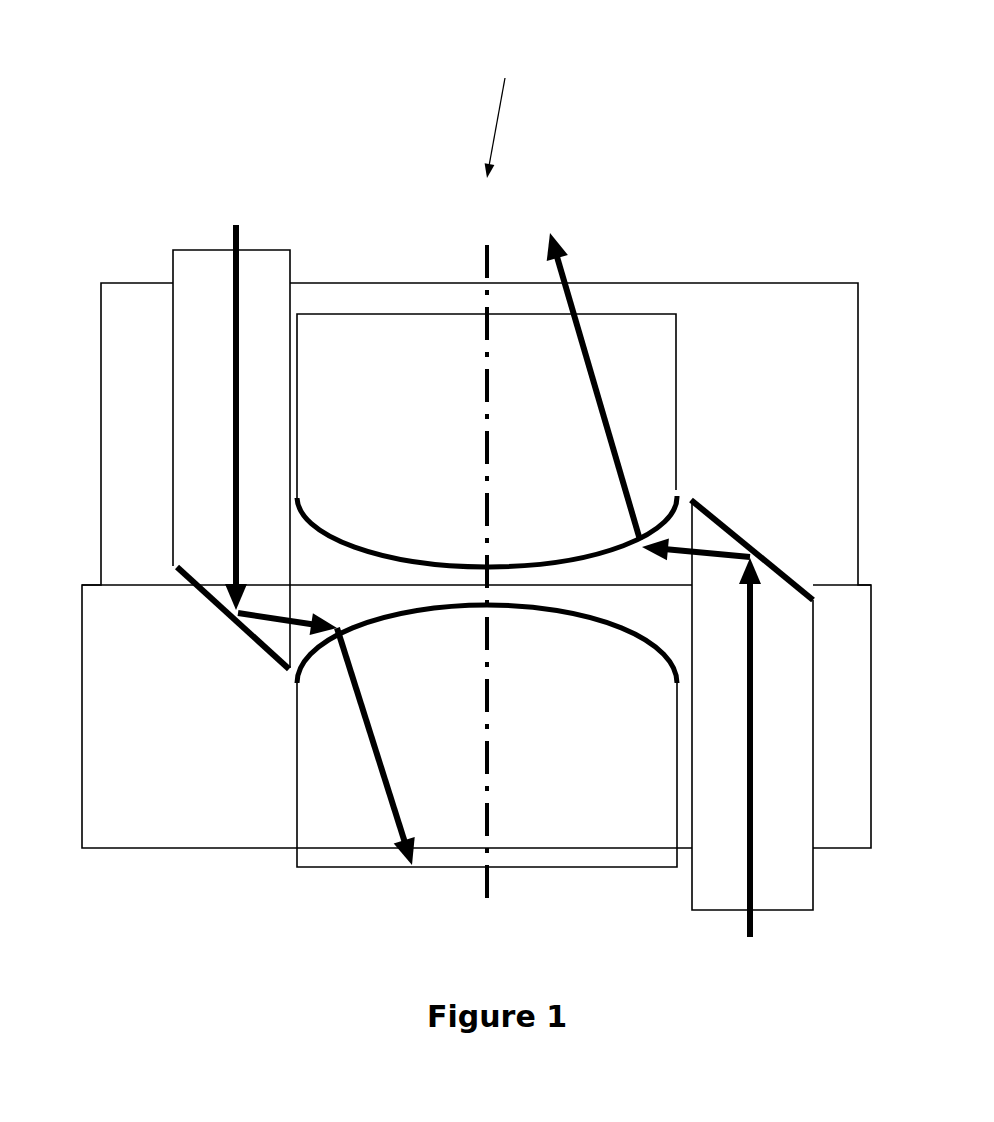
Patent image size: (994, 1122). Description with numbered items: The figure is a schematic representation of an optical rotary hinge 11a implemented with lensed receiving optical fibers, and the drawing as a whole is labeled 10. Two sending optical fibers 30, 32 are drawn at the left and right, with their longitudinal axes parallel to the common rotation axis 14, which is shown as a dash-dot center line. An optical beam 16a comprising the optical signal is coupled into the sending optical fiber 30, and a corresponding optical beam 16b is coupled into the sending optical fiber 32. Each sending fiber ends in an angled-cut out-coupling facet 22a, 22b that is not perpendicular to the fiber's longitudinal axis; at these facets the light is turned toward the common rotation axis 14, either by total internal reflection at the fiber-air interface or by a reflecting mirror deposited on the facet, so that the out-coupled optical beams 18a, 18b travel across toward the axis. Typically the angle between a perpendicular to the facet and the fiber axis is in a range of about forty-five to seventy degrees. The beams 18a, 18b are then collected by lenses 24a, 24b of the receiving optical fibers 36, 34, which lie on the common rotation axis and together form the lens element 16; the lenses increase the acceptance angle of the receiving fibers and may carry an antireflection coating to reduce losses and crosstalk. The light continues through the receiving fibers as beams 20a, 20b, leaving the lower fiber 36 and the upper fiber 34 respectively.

The optical device housing 10 is at (384, 282).
The optical rotary hinge 11a is at (517, 122).
The common rotation axis 14 is at (490, 772).
The lens 16 is at (527, 613).
The optical beam 16a is at (228, 417).
The optical beam 16b is at (748, 880).
The optical beam 18a is at (270, 625).
The optical beam 18b is at (722, 562).
The first refracted beam 20a is at (360, 720).
The second refracted beam 20b is at (615, 390).
The angled-cut out-coupling facet 22a is at (203, 597).
The angled-cut out-coupling facet 22b is at (776, 565).
The lens 24a is at (573, 622).
The lens 24b is at (367, 542).
The sending optical fiber 30 is at (183, 247).
The sending optical fiber 32 is at (735, 913).
The lensed receiving optical fiber 34 is at (676, 357).
The lensed receiving optical fiber 36 is at (595, 872).